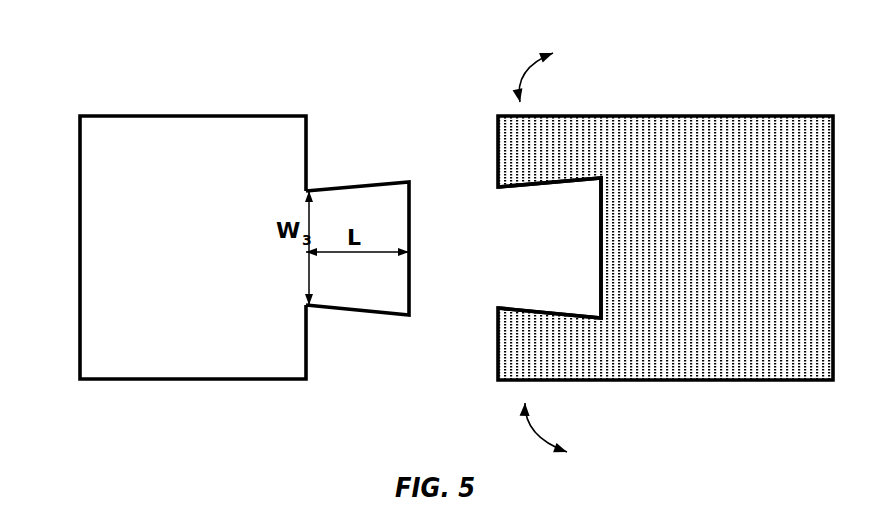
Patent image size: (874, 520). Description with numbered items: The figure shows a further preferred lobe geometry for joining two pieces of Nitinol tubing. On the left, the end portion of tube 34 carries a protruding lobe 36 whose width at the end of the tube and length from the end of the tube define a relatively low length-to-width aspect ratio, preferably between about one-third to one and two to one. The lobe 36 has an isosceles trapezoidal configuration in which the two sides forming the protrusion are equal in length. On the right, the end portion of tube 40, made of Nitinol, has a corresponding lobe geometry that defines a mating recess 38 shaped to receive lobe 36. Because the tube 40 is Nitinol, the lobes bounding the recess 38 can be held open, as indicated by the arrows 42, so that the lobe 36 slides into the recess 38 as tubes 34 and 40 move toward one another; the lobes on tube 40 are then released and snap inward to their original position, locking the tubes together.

The tube 34 is at (73, 381).
The lobe 36 is at (353, 173).
The recess 38 is at (539, 215).
The tube 40 is at (759, 135).
The arrows 42 is at (544, 252).